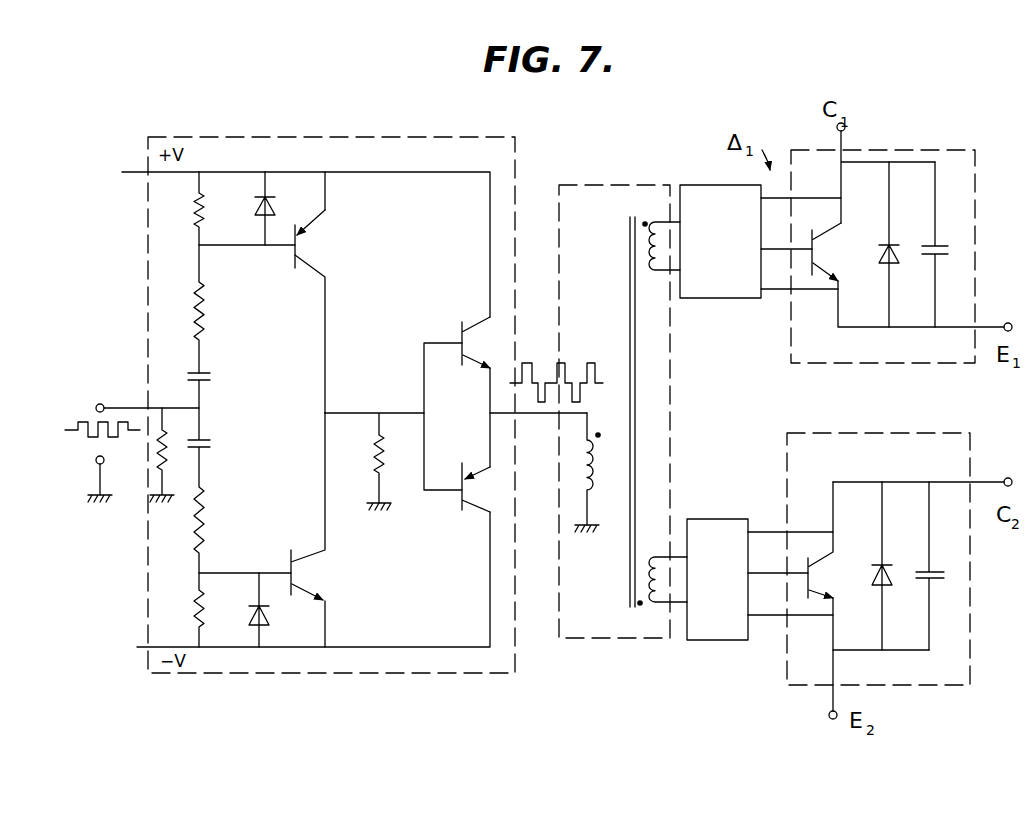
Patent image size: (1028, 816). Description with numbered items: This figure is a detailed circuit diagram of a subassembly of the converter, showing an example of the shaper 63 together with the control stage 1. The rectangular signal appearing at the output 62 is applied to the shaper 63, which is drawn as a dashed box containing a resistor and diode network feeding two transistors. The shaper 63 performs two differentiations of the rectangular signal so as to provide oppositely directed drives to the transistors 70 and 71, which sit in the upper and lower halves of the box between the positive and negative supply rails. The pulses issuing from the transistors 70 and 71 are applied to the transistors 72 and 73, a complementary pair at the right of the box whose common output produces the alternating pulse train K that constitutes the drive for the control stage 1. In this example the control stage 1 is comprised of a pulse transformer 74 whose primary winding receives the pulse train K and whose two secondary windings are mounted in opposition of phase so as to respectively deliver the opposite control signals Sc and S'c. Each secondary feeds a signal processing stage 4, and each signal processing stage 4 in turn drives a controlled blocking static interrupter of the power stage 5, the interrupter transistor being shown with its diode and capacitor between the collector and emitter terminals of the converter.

The control stage 1 is at (638, 392).
The signal processing stage 4 is at (741, 295).
The power stage 5 is at (926, 134).
The output 62 is at (132, 435).
The shaper 63 is at (376, 138).
The transistor 70 is at (318, 243).
The transistor 71 is at (312, 585).
The transistor 72 is at (456, 335).
The transistor 73 is at (455, 507).
The pulse transformer 74 is at (643, 442).